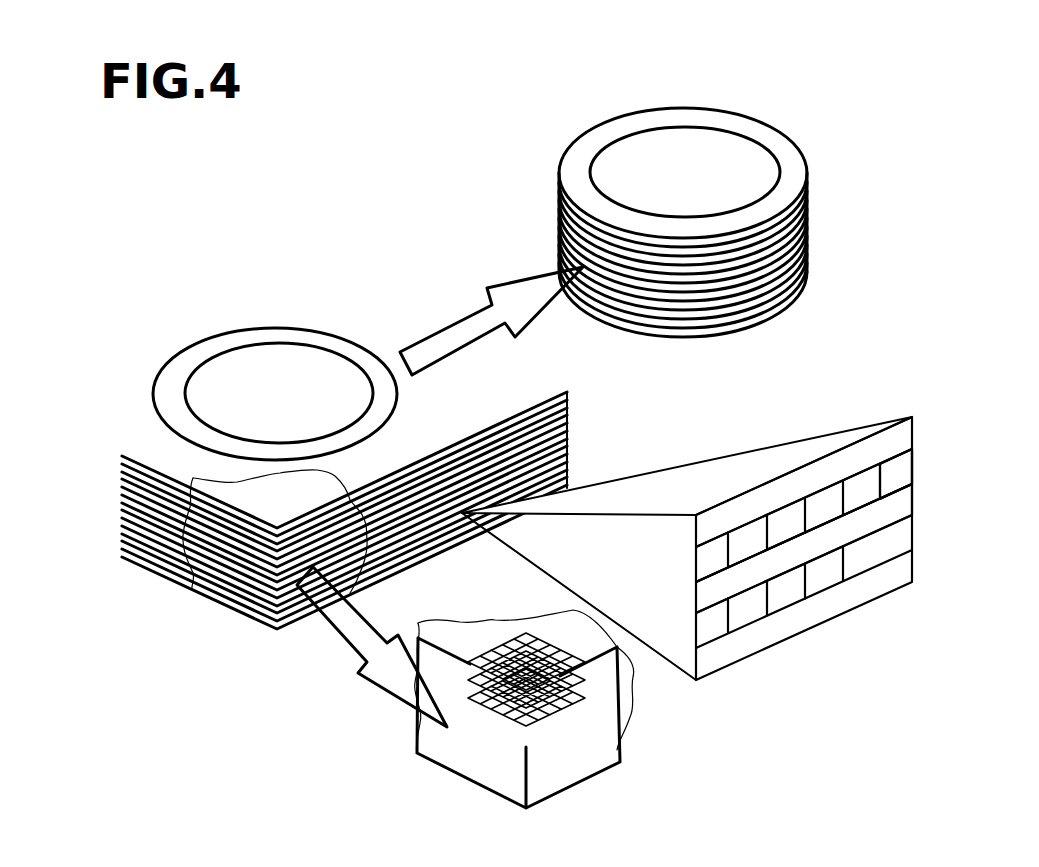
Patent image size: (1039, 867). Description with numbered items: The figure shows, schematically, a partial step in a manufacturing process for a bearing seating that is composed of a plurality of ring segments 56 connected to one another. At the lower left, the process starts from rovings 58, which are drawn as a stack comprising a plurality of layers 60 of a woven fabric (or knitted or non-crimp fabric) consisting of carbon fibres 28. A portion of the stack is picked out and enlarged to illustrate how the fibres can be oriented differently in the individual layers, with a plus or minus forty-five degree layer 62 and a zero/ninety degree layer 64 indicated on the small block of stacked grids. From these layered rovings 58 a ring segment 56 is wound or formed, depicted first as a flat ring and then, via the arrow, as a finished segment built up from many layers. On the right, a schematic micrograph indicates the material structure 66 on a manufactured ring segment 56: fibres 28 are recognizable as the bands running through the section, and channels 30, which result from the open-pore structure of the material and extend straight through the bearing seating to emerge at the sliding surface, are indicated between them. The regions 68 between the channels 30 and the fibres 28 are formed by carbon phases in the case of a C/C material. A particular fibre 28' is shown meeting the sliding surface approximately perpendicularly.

The carbon fibres 28 is at (734, 356).
The fibre 28' is at (854, 544).
The channels 30 is at (898, 535).
The ring segments 56 is at (205, 350).
The rovings 58 is at (127, 532).
The layers 60 is at (155, 518).
The ±45° layer 62 is at (563, 730).
The 0/90° layer 64 is at (580, 690).
The material structure 66 is at (902, 497).
The regions 68 is at (890, 477).